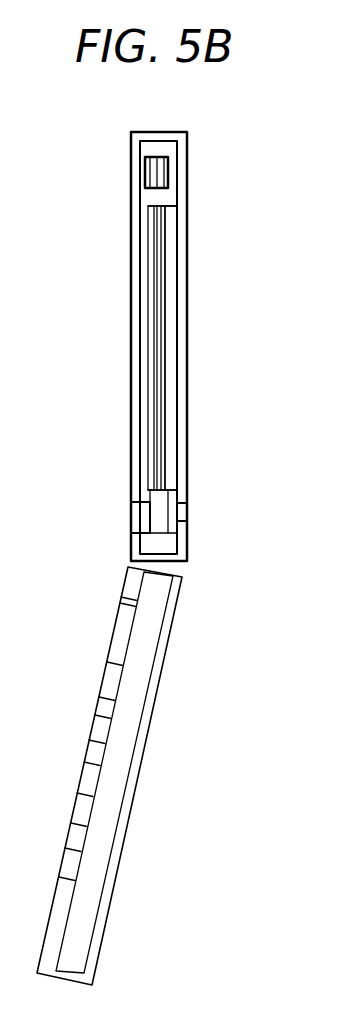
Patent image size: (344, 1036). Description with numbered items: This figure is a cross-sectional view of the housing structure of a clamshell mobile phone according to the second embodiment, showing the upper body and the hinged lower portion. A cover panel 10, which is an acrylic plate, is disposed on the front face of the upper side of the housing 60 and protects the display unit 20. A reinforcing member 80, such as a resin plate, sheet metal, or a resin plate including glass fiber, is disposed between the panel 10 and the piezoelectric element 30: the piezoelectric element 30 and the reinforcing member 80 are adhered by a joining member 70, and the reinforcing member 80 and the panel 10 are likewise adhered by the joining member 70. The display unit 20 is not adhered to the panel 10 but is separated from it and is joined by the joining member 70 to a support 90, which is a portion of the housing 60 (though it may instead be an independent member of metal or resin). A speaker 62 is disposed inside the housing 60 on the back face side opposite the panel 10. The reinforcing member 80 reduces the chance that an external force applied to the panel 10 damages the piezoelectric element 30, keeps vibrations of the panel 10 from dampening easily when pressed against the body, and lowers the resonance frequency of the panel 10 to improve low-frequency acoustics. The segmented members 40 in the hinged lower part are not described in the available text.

The panel 10 is at (131, 205).
The display unit 20 is at (155, 324).
The piezoelectric element 30 is at (165, 167).
The segment member 40 is at (128, 516).
The housing 60 is at (181, 198).
The speaker 62 is at (176, 506).
The joining member 70 is at (146, 156).
The reinforcing member 80 is at (150, 176).
The support 90 is at (172, 256).